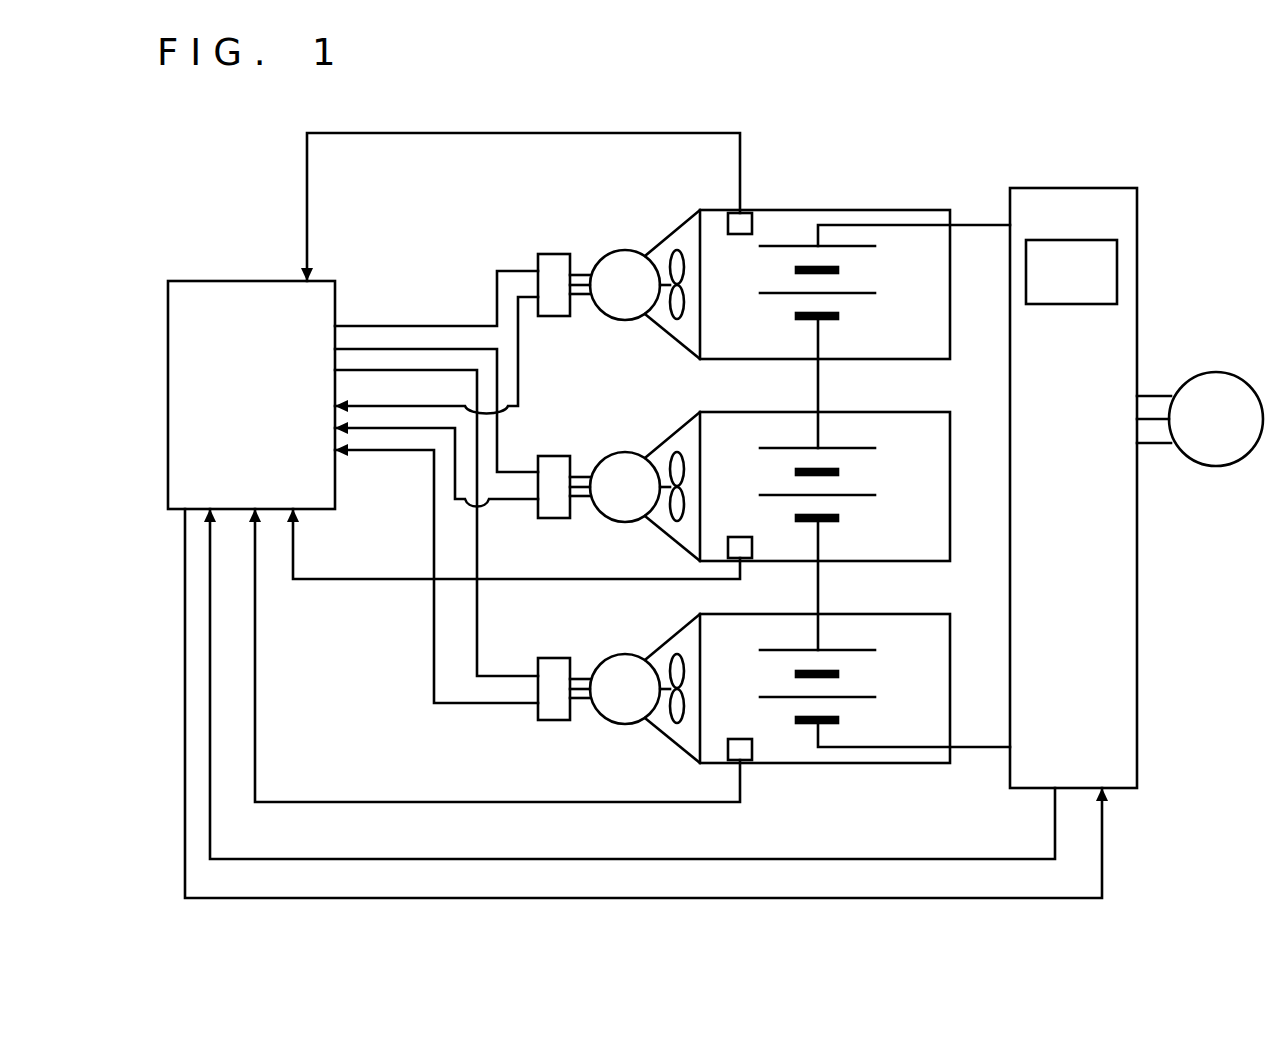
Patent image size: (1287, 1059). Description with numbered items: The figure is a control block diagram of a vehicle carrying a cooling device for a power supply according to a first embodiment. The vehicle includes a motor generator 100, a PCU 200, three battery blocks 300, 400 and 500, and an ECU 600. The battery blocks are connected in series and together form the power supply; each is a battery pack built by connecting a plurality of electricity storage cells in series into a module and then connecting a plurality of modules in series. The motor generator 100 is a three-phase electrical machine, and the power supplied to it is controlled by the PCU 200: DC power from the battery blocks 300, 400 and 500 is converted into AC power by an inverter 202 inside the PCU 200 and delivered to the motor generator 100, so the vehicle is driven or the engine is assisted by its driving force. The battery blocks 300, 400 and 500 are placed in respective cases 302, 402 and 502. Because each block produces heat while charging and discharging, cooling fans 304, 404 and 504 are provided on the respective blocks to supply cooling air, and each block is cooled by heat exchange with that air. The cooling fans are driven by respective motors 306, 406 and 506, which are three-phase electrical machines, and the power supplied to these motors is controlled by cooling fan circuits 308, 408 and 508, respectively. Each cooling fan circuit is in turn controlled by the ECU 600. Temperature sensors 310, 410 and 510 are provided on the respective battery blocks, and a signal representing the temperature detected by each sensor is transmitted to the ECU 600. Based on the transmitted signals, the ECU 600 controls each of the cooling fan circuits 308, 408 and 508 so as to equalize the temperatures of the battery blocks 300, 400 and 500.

The motor generator 100 is at (1222, 372).
The PCU (Power Control Unit) 200 is at (1083, 188).
The inverter 202 is at (1083, 240).
The battery block 300 is at (887, 260).
The case 302 is at (845, 210).
The cooling fan 304 is at (677, 250).
The motor 306 is at (627, 250).
The cooling fan circuit 308 is at (556, 253).
The temperature sensor 310 is at (752, 213).
The battery block 400 is at (887, 465).
The case 402 is at (845, 412).
The cooling fan 404 is at (677, 452).
The motor 406 is at (627, 452).
The cooling fan circuit 408 is at (556, 455).
The temperature sensor 410 is at (752, 546).
The battery block 500 is at (887, 665).
The case 502 is at (845, 614).
The cooling fan 504 is at (677, 654).
The motor 506 is at (627, 654).
The cooling fan circuit 508 is at (556, 657).
The temperature sensor 510 is at (752, 750).
The ECU (Electronic Control Unit) 600 is at (228, 281).